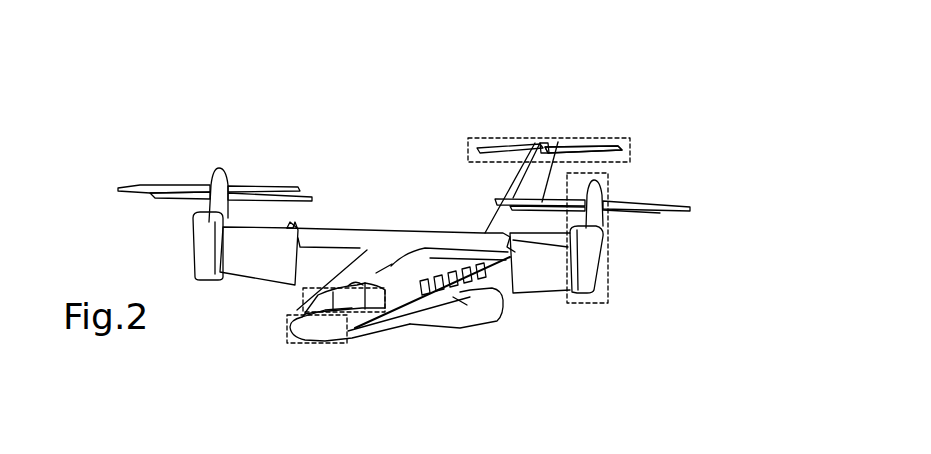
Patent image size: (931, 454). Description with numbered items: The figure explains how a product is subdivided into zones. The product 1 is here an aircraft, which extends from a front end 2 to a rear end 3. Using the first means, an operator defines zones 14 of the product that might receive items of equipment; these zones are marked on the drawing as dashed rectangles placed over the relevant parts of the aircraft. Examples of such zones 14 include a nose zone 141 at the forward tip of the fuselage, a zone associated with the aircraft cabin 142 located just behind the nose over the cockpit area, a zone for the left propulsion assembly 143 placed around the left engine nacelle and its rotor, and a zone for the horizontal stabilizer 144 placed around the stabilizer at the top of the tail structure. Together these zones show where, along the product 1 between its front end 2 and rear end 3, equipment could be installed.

The product 1 is at (173, 127).
The front end 2 is at (298, 346).
The rear end 3 is at (545, 96).
The zones 14 is at (613, 139).
The nose zone 141 is at (288, 322).
The zone associated with the aircraft cabin 142 is at (384, 293).
The zone for the left propulsion assembly 143 is at (620, 248).
The zone for the horizontal stabilizer 144 is at (486, 138).